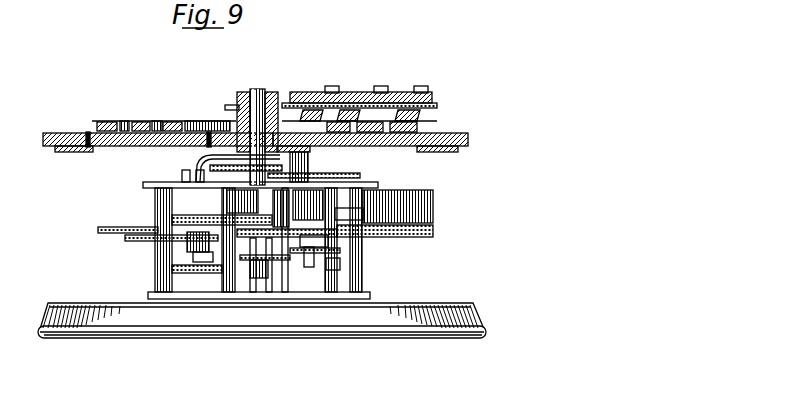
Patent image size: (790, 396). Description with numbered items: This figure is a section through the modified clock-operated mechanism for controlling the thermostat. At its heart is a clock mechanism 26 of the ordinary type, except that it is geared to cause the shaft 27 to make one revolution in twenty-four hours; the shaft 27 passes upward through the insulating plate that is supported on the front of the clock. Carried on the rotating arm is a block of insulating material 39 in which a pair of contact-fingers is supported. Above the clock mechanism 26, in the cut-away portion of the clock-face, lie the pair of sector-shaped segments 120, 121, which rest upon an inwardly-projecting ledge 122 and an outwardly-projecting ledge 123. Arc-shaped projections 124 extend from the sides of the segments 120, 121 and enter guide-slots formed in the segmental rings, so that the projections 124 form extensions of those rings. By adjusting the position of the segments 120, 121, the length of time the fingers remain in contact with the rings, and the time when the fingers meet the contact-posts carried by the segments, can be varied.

The clock mechanism 26 is at (365, 273).
The shaft 27 is at (256, 89).
The block of insulating material 39 is at (357, 92).
The sector-shaped segment 120 is at (127, 146).
The sector-shaped segment 121 is at (362, 147).
The inwardly-projecting ledge 122 is at (76, 149).
The outwardly-projecting ledge 123 is at (208, 157).
The arc-shaped projections 124 is at (107, 124).